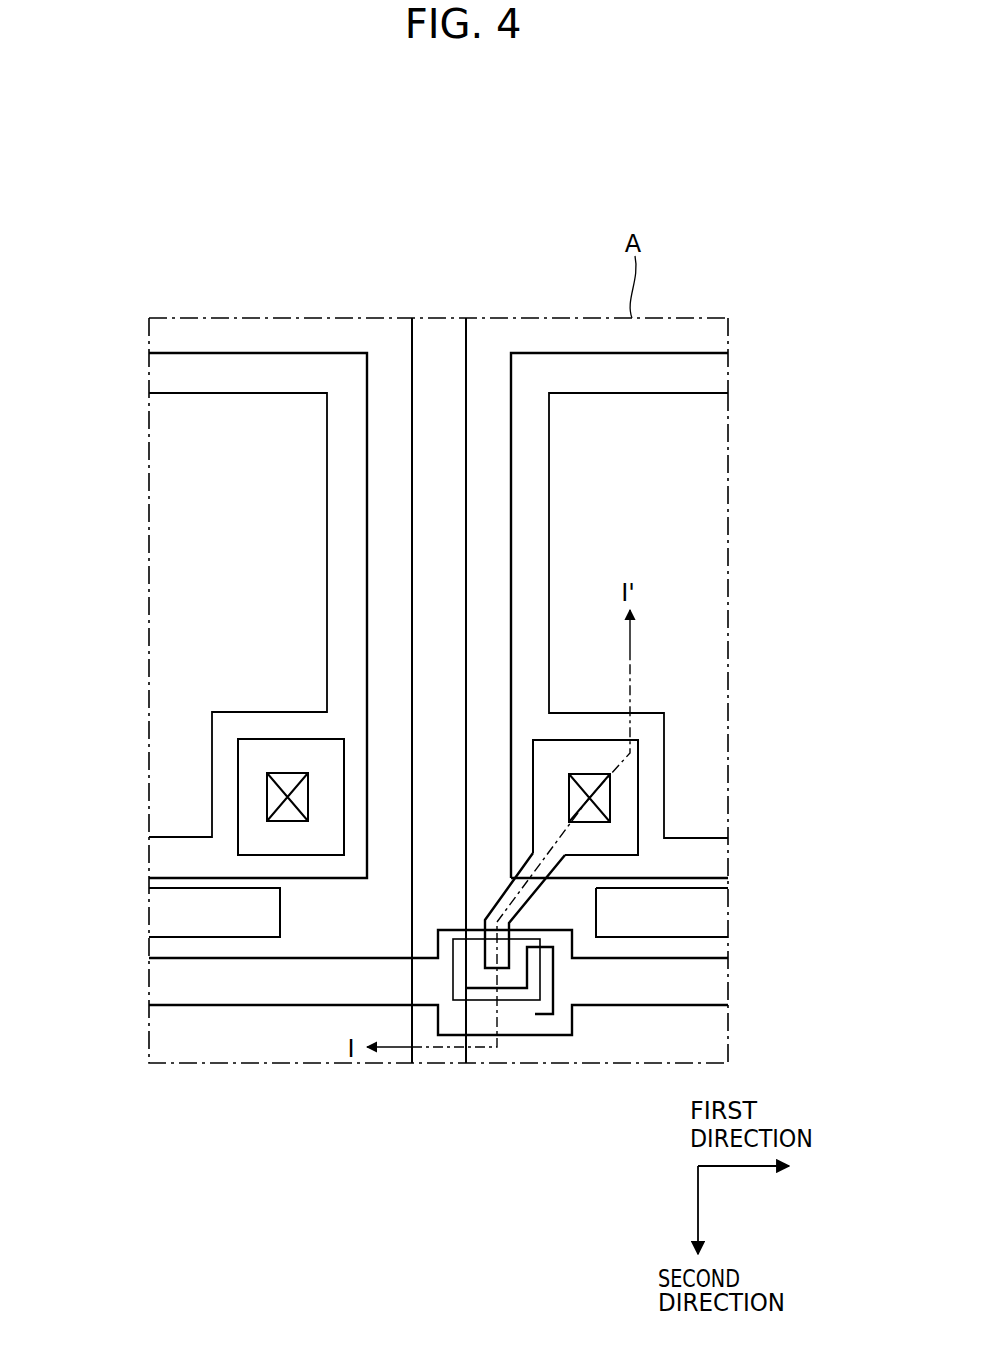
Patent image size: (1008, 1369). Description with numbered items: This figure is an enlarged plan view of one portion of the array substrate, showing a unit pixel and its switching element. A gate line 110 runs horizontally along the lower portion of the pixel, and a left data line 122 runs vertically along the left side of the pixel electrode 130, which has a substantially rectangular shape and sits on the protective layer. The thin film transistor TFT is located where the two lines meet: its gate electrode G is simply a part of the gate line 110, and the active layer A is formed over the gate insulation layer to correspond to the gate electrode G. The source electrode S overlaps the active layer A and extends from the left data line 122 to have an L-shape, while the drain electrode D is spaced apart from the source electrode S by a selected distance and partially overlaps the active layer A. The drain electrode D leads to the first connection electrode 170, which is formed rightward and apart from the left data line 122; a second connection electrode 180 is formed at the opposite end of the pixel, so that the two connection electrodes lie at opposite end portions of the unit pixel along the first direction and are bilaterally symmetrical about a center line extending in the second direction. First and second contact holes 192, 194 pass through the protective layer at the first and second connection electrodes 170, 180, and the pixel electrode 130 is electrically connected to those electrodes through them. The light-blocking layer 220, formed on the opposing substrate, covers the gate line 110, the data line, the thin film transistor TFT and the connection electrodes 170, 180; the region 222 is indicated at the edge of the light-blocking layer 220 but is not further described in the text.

The gate line 110 is at (259, 985).
The left data line 122 is at (440, 345).
The pixel electrode 130 is at (689, 351).
The first connection electrode 170 is at (638, 792).
The second connection electrode 180 is at (238, 793).
The first contact hole 192 is at (588, 823).
The second contact hole 194 is at (295, 822).
The light-blocking layer 220 is at (700, 393).
The opening region 222 is at (705, 462).
The thin film transistor TFT is at (438, 1030).
The gate electrode G is at (551, 1023).
The active layer A is at (453, 960).
The source electrode S is at (536, 1013).
The drain electrode D is at (485, 962).